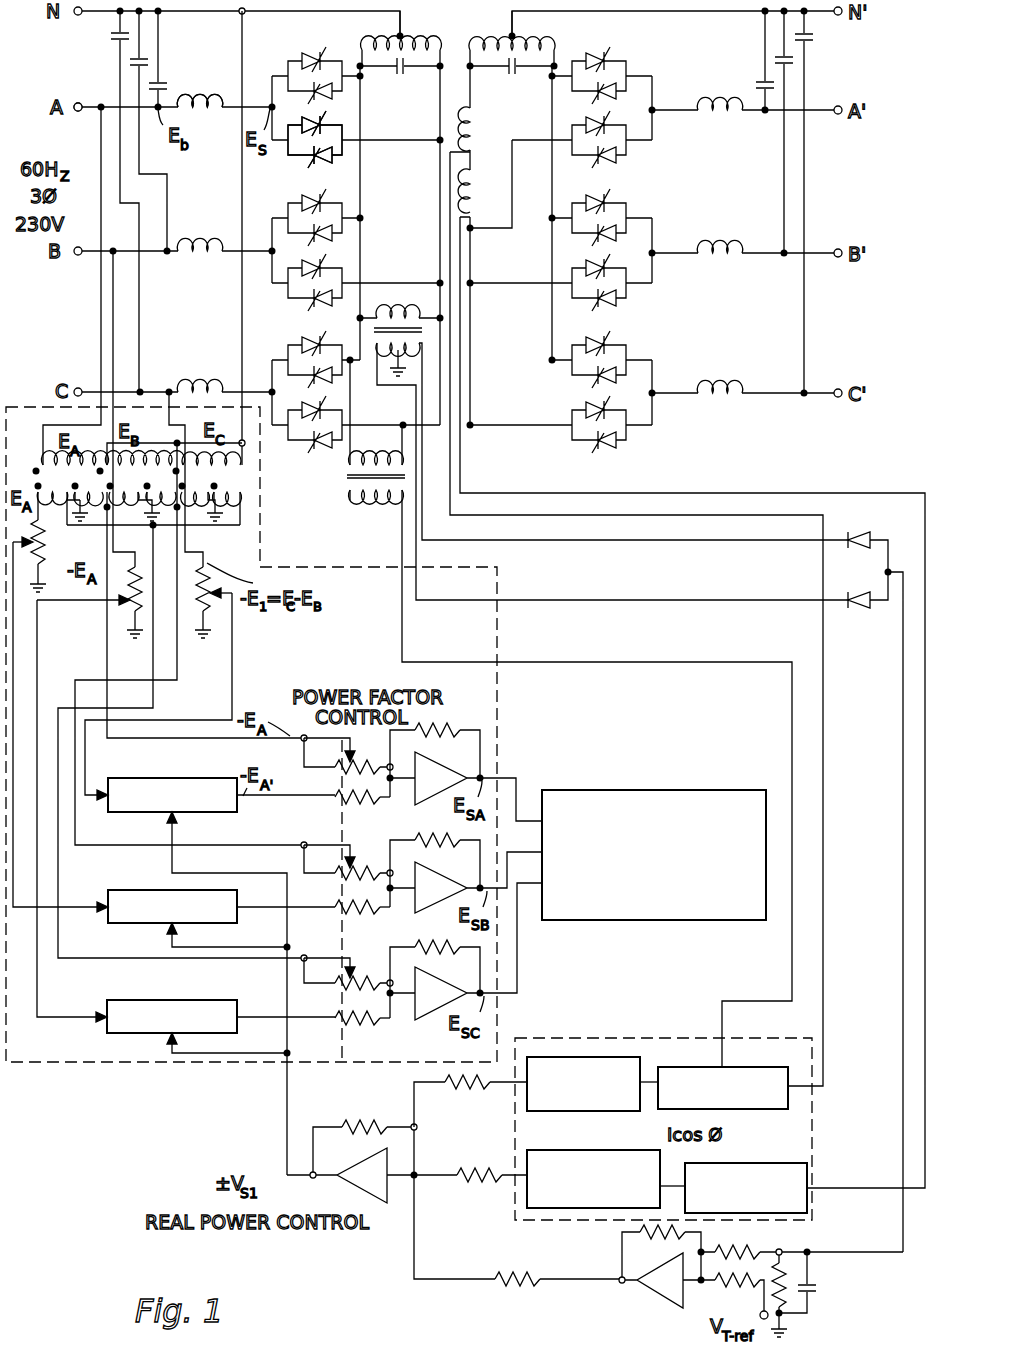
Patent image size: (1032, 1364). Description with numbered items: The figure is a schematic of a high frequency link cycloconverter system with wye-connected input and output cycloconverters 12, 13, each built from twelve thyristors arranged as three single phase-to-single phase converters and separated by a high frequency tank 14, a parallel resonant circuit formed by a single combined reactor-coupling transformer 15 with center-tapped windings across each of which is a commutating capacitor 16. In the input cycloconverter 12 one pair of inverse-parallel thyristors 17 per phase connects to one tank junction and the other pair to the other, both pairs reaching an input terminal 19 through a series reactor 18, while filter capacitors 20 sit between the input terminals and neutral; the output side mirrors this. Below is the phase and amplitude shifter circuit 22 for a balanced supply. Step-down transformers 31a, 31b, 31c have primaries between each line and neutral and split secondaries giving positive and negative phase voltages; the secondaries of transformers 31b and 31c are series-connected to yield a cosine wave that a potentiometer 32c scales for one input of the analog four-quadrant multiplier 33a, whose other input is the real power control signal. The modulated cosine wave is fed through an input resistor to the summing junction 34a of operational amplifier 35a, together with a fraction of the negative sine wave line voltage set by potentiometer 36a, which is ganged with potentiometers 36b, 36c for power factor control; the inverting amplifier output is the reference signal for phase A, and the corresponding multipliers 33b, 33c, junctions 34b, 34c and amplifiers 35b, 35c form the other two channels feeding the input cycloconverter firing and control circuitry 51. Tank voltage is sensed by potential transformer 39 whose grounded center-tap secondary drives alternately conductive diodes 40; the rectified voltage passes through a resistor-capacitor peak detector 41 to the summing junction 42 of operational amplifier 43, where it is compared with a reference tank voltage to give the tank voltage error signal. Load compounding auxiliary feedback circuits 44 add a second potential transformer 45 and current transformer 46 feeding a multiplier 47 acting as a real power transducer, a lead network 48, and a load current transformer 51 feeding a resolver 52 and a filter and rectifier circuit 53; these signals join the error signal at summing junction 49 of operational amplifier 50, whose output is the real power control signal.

The input cycloconverter 12 is at (323, 4).
The output cycloconverter 13 is at (557, 10).
The high frequency tank 14 is at (449, 49).
The reactor-coupling transformer 15 is at (398, 35).
The commutating capacitor 16 is at (400, 76).
The inverse-parallel thyristors 17 is at (313, 167).
The series reactor 18 is at (197, 101).
The input terminal 19 is at (78, 101).
The filter capacitor 20 is at (159, 84).
The phase and amplitude shifter circuit 22 is at (213, 1062).
The step-down transformer 31a is at (57, 481).
The step-down transformer 31b is at (144, 460).
The step-down transformer 31c is at (240, 465).
The potentiometer 32c is at (205, 625).
The analog four-quadrant multiplier 33a is at (137, 778).
The analog four-quadrant multiplier 33b is at (180, 890).
The analog four-quadrant multiplier 33c is at (203, 998).
The summing junction 34a is at (392, 786).
The summing junction 34b is at (392, 899).
The summing junction 34c is at (392, 1009).
The operational amplifier 35a is at (433, 774).
The operational amplifier 35b is at (433, 884).
The operational amplifier 35c is at (438, 994).
The potentiometer 36a is at (339, 775).
The potentiometer 36b is at (339, 881).
The potentiometer 36c is at (335, 991).
The potential transformer 39 is at (410, 312).
The diodes 40 is at (870, 608).
The resistor-capacitor peak detector 41 is at (782, 1251).
The summing junction 42 is at (703, 1284).
The operational amplifier 43 is at (670, 1297).
The load compounding auxiliary feedback circuits 44 is at (636, 1038).
The potential transformer 45 is at (360, 497).
The current transformer 46 is at (474, 192).
The analog four-quadrant multiplier 47 is at (714, 1066).
The capacitor-resistor lead network 48 is at (600, 1058).
The summing junction 49 is at (418, 1181).
The operational amplifier 50 is at (376, 1162).
The load current transformer 51 is at (480, 140).
The resolver 52 is at (753, 1164).
The filter and rectifier circuit 53 is at (564, 1152).